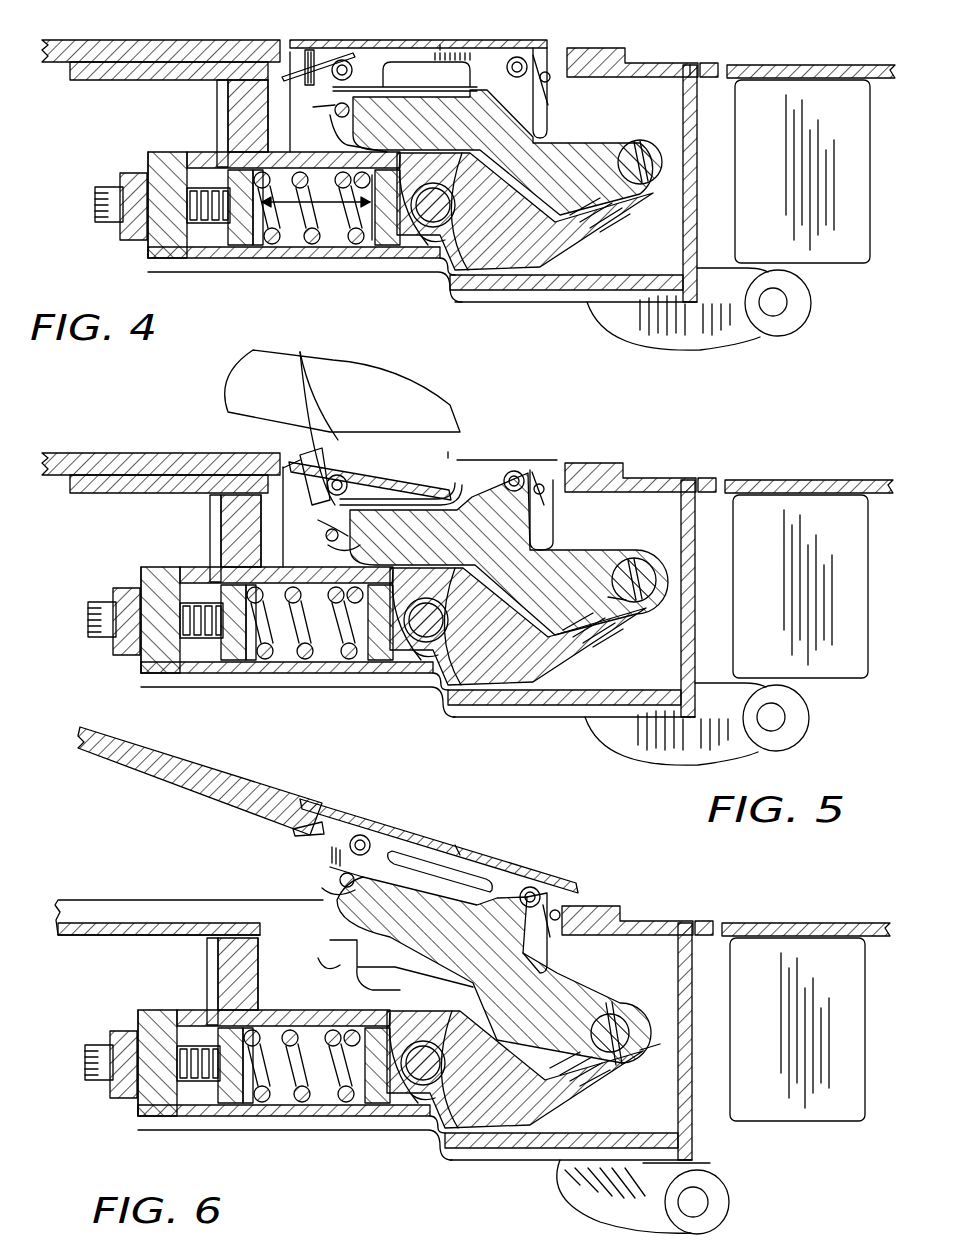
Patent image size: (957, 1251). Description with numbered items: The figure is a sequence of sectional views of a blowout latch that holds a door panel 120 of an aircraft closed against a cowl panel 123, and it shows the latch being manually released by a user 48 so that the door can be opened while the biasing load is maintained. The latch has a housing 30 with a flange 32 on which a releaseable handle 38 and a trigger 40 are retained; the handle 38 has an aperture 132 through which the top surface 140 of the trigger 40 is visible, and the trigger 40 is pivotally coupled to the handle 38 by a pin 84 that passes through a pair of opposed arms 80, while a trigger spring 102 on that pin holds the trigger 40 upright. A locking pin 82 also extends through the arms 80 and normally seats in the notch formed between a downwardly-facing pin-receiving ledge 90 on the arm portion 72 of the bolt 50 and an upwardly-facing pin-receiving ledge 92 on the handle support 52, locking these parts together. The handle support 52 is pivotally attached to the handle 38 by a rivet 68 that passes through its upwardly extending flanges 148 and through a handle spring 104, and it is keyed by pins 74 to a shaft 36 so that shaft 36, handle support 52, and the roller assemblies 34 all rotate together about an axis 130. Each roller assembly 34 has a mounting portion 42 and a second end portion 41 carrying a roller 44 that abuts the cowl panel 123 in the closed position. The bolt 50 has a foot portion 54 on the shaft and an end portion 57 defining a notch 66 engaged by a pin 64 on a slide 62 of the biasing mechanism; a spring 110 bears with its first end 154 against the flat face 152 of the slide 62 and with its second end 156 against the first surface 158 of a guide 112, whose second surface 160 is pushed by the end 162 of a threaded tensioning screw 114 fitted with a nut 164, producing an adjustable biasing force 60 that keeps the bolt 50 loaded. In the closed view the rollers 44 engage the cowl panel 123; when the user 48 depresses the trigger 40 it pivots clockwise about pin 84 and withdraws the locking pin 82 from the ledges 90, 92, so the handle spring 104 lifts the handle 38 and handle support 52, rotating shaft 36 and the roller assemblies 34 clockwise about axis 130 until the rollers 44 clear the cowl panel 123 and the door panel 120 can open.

In FIG. 4, the housing 30 is at (697, 205).
In FIG. 5, the housing 30 is at (697, 622).
In FIG. 6, the housing 30 is at (692, 1080).
In FIG. 4, the flange 32 is at (205, 80).
In FIG. 5, the flange 32 is at (100, 493).
In FIG. 6, the flange 32 is at (90, 900).
In FIG. 4, the roller assemblies 34 is at (650, 338).
In FIG. 5, the roller assemblies 34 is at (728, 748).
In FIG. 6, the roller assemblies 34 is at (615, 1208).
In FIG. 4, the shaft 36 is at (690, 65).
In FIG. 5, the shaft 36 is at (610, 565).
In FIG. 6, the shaft 36 is at (660, 1045).
In FIG. 4, the releaseable handle 38 is at (160, 45).
In FIG. 5, the releaseable handle 38 is at (175, 455).
In FIG. 6, the releaseable handle 38 is at (195, 780).
In FIG. 4, the trigger 40 is at (445, 44).
In FIG. 5, the trigger 40 is at (450, 450).
In FIG. 6, the trigger 40 is at (458, 845).
In FIG. 4, the second end portion 41 is at (766, 314).
In FIG. 5, the second end portion 41 is at (775, 728).
In FIG. 6, the second end portion 41 is at (702, 1188).
In FIG. 4, the mounting portion 42 is at (718, 85).
In FIG. 5, the mounting portion 42 is at (716, 502).
In FIG. 6, the mounting portion 42 is at (713, 943).
In FIG. 4, the roller 44 is at (803, 325).
In FIG. 5, the roller 44 is at (808, 724).
In FIG. 6, the roller 44 is at (730, 1215).
In FIG. 5, the user 48 is at (362, 378).
In FIG. 4, the bolt 50 is at (553, 258).
In FIG. 5, the bolt 50 is at (548, 672).
In FIG. 6, the bolt 50 is at (552, 1108).
In FIG. 4, the handle support 52 is at (615, 128).
In FIG. 5, the handle support 52 is at (553, 535).
In FIG. 6, the handle support 52 is at (572, 975).
In FIG. 4, the foot portion 54 is at (600, 210).
In FIG. 5, the foot portion 54 is at (592, 625).
In FIG. 6, the foot portion 54 is at (595, 1082).
In FIG. 4, the end portion 57 is at (500, 255).
In FIG. 5, the end portion 57 is at (500, 675).
In FIG. 6, the end portion 57 is at (492, 1112).
In FIG. 4, the biasing force 60 is at (316, 262).
In FIG. 4, the slide 62 is at (411, 225).
In FIG. 5, the slide 62 is at (418, 650).
In FIG. 6, the slide 62 is at (412, 1090).
In FIG. 4, the pin 64 is at (440, 245).
In FIG. 5, the pin 64 is at (426, 625).
In FIG. 6, the pin 64 is at (422, 1085).
In FIG. 4, the notch 66 is at (433, 222).
In FIG. 5, the notch 66 is at (429, 640).
In FIG. 6, the notch 66 is at (426, 1090).
In FIG. 4, the rivet 68 is at (548, 70).
In FIG. 5, the rivet 68 is at (558, 465).
In FIG. 6, the rivet 68 is at (557, 908).
In FIG. 6, the arm portion 72 is at (362, 982).
In FIG. 4, the pins 74 is at (640, 142).
In FIG. 5, the pins 74 is at (632, 557).
In FIG. 6, the pins 74 is at (612, 1002).
In FIG. 4, the arms 80 is at (312, 52).
In FIG. 5, the arms 80 is at (300, 390).
In FIG. 6, the arms 80 is at (330, 865).
In FIG. 4, the locking pin 82 is at (335, 111).
In FIG. 5, the locking pin 82 is at (330, 525).
In FIG. 6, the locking pin 82 is at (340, 870).
In FIG. 4, the pin 84 is at (345, 60).
In FIG. 5, the pin 84 is at (341, 475).
In FIG. 6, the pin 84 is at (364, 835).
In FIG. 4, the pin-receiving ledge 90 is at (313, 107).
In FIG. 5, the pin-receiving ledge 90 is at (330, 530).
In FIG. 6, the pin-receiving ledge 90 is at (322, 962).
In FIG. 4, the pin-receiving ledge 92 is at (338, 120).
In FIG. 5, the pin-receiving ledge 92 is at (335, 545).
In FIG. 6, the pin-receiving ledge 92 is at (322, 888).
In FIG. 4, the trigger spring 102 is at (290, 70).
In FIG. 5, the trigger spring 102 is at (310, 465).
In FIG. 6, the trigger spring 102 is at (313, 825).
In FIG. 4, the handle spring 104 is at (517, 57).
In FIG. 5, the handle spring 104 is at (513, 471).
In FIG. 6, the handle spring 104 is at (528, 887).
In FIG. 4, the spring 110 is at (305, 245).
In FIG. 5, the spring 110 is at (305, 660).
In FIG. 6, the spring 110 is at (298, 1100).
In FIG. 4, the guide 112 is at (210, 230).
In FIG. 5, the guide 112 is at (206, 640).
In FIG. 6, the guide 112 is at (202, 1085).
In FIG. 4, the threaded tensioning screw 114 is at (100, 222).
In FIG. 5, the threaded tensioning screw 114 is at (140, 590).
In FIG. 6, the threaded tensioning screw 114 is at (112, 1082).
In FIG. 4, the door panel 120 is at (712, 63).
In FIG. 5, the door panel 120 is at (710, 480).
In FIG. 6, the door panel 120 is at (703, 920).
In FIG. 4, the cowl panel 123 is at (805, 65).
In FIG. 5, the cowl panel 123 is at (805, 481).
In FIG. 6, the cowl panel 123 is at (792, 923).
In FIG. 4, the axis 130 is at (662, 162).
In FIG. 5, the axis 130 is at (656, 580).
In FIG. 6, the axis 130 is at (630, 1030).
In FIG. 5, the aperture 132 is at (285, 468).
In FIG. 4, the top surface 140 is at (400, 40).
In FIG. 5, the top surface 140 is at (428, 478).
In FIG. 6, the top surface 140 is at (422, 838).
In FIG. 4, the flanges 148 is at (548, 100).
In FIG. 5, the flanges 148 is at (475, 498).
In FIG. 6, the flanges 148 is at (535, 893).
In FIG. 4, the flat face 152 is at (383, 222).
In FIG. 5, the flat face 152 is at (376, 625).
In FIG. 6, the flat face 152 is at (373, 1065).
In FIG. 4, the first end 154 is at (385, 245).
In FIG. 4, the second end 156 is at (222, 165).
In FIG. 5, the second end 156 is at (228, 575).
In FIG. 6, the second end 156 is at (230, 1025).
In FIG. 4, the first surface 158 is at (258, 230).
In FIG. 5, the first surface 158 is at (252, 645).
In FIG. 6, the first surface 158 is at (250, 1100).
In FIG. 4, the second surface 160 is at (165, 152).
In FIG. 5, the second surface 160 is at (170, 675).
In FIG. 6, the second surface 160 is at (162, 1010).
In FIG. 4, the end 162 is at (240, 225).
In FIG. 5, the end 162 is at (233, 645).
In FIG. 6, the end 162 is at (256, 1030).
In FIG. 4, the nut 164 is at (132, 175).
In FIG. 5, the nut 164 is at (125, 655).
In FIG. 6, the nut 164 is at (122, 1100).